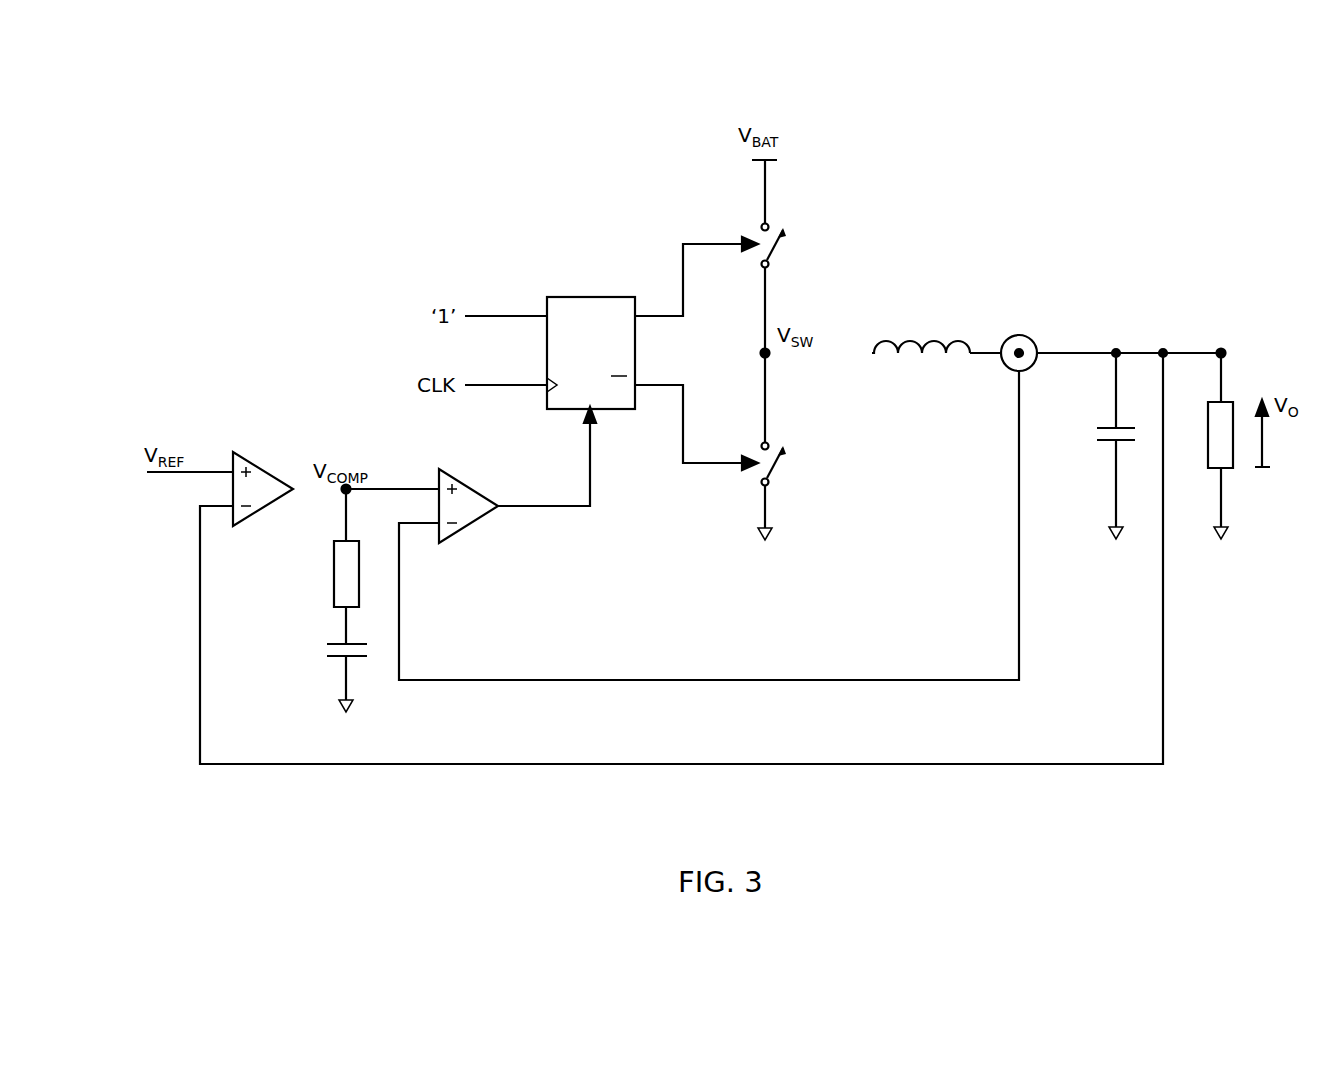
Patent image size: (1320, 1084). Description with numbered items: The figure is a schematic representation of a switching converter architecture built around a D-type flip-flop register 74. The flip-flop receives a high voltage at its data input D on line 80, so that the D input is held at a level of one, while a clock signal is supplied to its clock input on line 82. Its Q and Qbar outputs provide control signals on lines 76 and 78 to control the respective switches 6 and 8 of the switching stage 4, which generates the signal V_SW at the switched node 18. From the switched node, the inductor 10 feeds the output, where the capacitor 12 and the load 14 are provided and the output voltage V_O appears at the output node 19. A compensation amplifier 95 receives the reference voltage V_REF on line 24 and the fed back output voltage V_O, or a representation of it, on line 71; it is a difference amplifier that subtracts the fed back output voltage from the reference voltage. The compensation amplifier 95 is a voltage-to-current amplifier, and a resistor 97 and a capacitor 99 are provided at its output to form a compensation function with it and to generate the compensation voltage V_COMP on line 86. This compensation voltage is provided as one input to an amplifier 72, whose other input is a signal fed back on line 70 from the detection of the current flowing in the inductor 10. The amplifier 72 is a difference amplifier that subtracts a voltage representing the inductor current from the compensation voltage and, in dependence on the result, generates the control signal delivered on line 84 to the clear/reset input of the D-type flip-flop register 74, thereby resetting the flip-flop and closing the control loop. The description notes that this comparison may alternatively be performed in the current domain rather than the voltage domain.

The switching stage 4 is at (790, 200).
The switch 6 is at (778, 252).
The switch 8 is at (778, 470).
The inductor 10 is at (915, 344).
The capacitor 12 is at (1104, 443).
The load 14 is at (1215, 470).
The switched node 18 is at (762, 352).
The output node 19 is at (1222, 350).
The line 24 is at (182, 474).
The line 70 is at (880, 682).
The line 71 is at (720, 766).
The amplifier 72 is at (470, 484).
The D-type flip-flop register 74 is at (578, 297).
The line 76 is at (716, 243).
The line 78 is at (716, 465).
The line 80 is at (529, 320).
The line 82 is at (529, 389).
The line 84 is at (592, 457).
The line 86 is at (415, 484).
The compensation amplifier 95 is at (260, 462).
The resistor 97 is at (334, 560).
The capacitor 99 is at (340, 643).